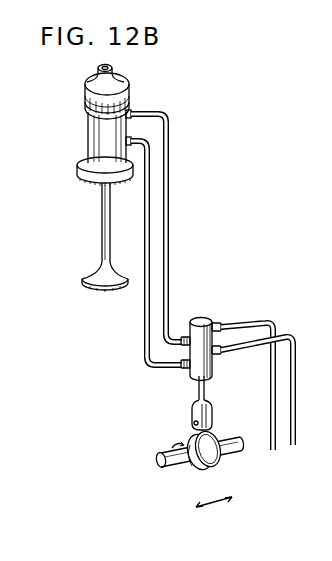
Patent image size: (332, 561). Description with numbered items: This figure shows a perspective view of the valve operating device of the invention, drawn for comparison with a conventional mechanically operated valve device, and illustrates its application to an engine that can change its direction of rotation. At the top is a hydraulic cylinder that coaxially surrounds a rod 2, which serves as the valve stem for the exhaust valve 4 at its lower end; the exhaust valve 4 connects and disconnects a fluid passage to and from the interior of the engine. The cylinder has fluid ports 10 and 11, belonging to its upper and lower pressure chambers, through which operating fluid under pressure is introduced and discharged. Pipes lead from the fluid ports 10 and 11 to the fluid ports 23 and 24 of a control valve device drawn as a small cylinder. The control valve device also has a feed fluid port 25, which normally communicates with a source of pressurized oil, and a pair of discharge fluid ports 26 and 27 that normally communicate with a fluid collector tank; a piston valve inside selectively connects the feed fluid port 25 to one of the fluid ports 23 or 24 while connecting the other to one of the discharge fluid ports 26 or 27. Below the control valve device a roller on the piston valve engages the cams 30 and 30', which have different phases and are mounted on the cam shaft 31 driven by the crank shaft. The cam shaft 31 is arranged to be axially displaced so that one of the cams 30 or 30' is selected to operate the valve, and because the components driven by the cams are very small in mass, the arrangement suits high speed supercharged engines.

The rod 2 is at (102, 217).
The exhaust valve 4 is at (108, 288).
The fluid port 10 is at (130, 112).
The fluid port 11 is at (130, 139).
The fluid port 23 is at (186, 336).
The fluid port 24 is at (185, 368).
The feed fluid port 25 is at (222, 342).
The discharge fluid port 26 is at (217, 323).
The discharge fluid port 27 is at (218, 355).
The cam 30 is at (215, 424).
The cam 30' is at (205, 471).
The cam shaft 31 is at (176, 466).